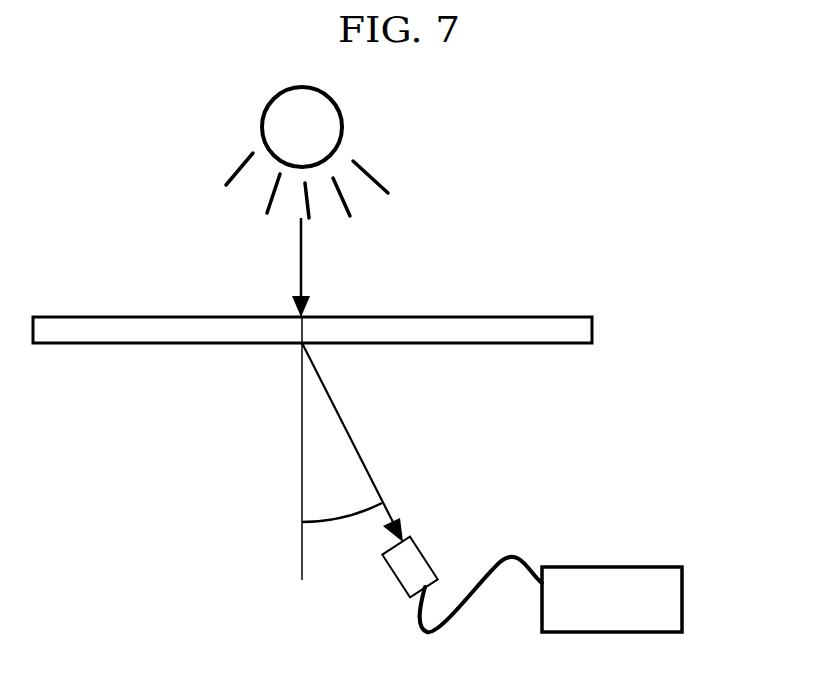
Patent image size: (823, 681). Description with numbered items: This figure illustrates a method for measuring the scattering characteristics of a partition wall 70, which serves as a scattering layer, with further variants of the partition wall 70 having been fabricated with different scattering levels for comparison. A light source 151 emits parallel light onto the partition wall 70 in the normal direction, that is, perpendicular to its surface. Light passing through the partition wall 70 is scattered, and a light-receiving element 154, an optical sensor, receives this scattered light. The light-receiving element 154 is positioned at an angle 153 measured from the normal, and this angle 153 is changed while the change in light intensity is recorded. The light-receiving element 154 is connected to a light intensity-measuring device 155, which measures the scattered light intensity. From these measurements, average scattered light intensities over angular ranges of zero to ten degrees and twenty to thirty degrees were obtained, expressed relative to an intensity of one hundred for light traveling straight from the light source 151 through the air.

The light source 151 is at (267, 102).
The partition wall 70 is at (592, 329).
The angle 153 is at (338, 525).
The light-receiving element 154 is at (427, 555).
The light intensity-measuring device 155 is at (633, 565).